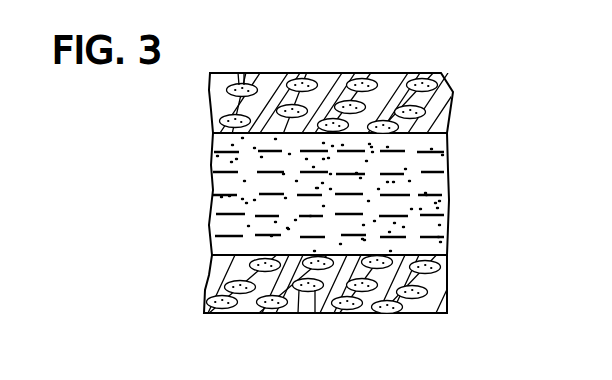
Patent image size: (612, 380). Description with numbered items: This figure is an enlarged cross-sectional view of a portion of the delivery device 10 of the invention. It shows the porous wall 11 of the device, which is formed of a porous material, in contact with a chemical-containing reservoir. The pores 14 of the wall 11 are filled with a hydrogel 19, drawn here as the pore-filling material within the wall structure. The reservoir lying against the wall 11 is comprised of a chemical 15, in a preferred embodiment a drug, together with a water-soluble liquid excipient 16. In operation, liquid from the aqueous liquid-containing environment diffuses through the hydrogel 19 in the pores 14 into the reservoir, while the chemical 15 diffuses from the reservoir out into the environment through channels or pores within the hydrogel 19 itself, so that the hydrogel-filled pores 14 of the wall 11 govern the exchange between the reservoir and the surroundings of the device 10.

The delivery device 10 is at (459, 89).
The porous wall 11 is at (364, 313).
The pores 14 is at (419, 79).
The chemical 15 is at (446, 247).
The water-soluble excipient 16 is at (424, 216).
The hydrogel 19 is at (240, 61).